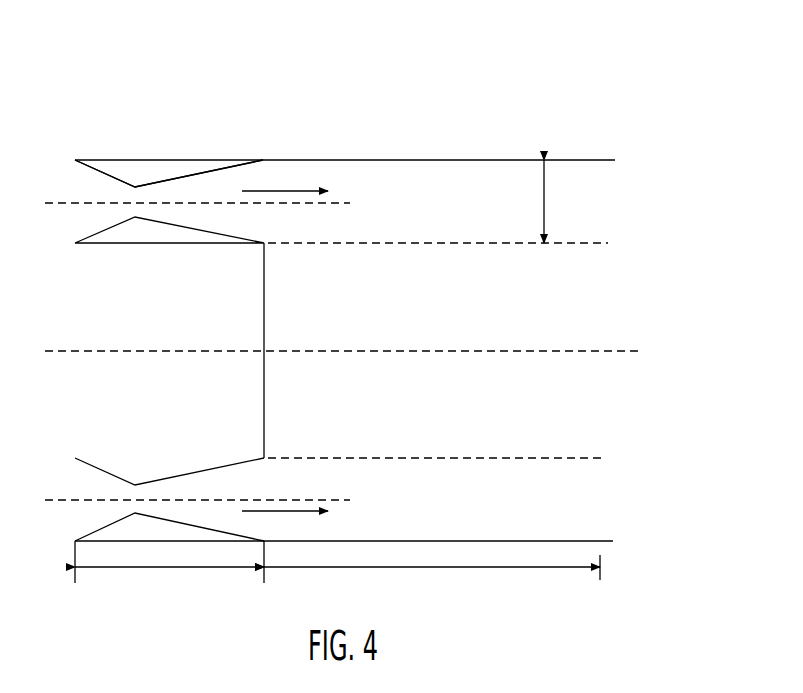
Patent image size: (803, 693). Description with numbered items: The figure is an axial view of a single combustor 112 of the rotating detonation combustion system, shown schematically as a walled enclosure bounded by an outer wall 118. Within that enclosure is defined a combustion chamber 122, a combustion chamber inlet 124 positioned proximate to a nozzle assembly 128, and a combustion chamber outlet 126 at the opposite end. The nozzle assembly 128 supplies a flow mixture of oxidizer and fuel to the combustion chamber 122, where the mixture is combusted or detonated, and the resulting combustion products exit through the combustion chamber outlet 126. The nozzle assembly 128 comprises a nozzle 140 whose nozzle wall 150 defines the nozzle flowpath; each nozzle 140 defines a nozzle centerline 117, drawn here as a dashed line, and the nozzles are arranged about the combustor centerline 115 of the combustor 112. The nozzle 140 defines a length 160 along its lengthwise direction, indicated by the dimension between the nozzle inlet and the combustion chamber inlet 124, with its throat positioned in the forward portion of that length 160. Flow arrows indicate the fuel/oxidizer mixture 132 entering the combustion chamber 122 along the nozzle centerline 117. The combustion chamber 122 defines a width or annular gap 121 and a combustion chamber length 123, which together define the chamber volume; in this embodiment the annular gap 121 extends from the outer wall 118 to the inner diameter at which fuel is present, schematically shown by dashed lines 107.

The combustor 112 is at (438, 88).
The outer wall 118 is at (480, 160).
The nozzle assembly 128 is at (136, 138).
The nozzle wall 150 is at (173, 175).
The nozzle 140 is at (117, 233).
The combustion chamber inlet 124 is at (279, 247).
The fuel/oxidizer mixture 132 is at (288, 190).
The nozzle centerline 117 is at (315, 204).
The lines 107 is at (568, 243).
The combustion chamber outlet 126 is at (608, 473).
The combustor centerline 115 is at (567, 351).
The annular gap 121 is at (544, 215).
The combustion chamber 122 is at (536, 308).
The length 160 is at (187, 567).
The combustion chamber length 123 is at (498, 567).